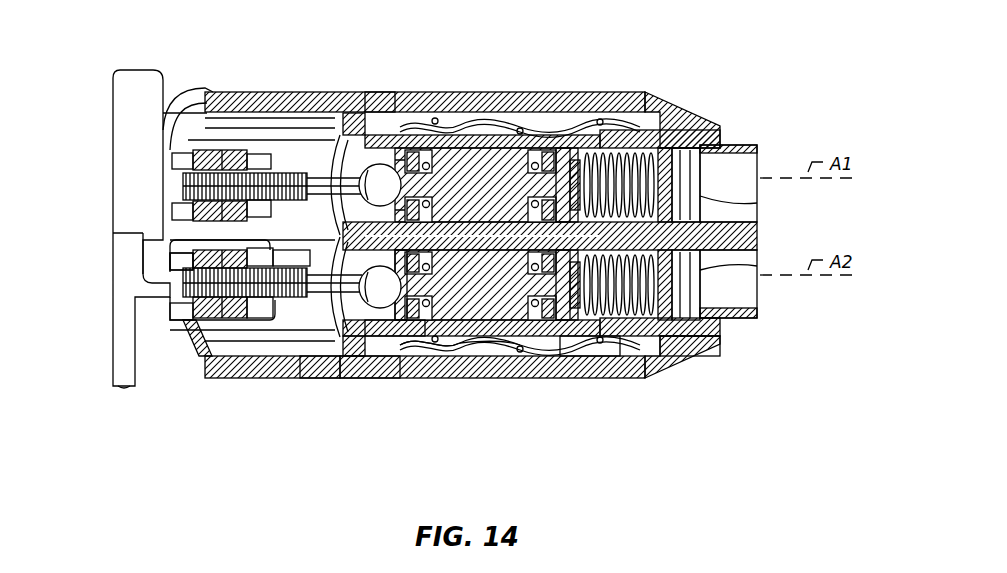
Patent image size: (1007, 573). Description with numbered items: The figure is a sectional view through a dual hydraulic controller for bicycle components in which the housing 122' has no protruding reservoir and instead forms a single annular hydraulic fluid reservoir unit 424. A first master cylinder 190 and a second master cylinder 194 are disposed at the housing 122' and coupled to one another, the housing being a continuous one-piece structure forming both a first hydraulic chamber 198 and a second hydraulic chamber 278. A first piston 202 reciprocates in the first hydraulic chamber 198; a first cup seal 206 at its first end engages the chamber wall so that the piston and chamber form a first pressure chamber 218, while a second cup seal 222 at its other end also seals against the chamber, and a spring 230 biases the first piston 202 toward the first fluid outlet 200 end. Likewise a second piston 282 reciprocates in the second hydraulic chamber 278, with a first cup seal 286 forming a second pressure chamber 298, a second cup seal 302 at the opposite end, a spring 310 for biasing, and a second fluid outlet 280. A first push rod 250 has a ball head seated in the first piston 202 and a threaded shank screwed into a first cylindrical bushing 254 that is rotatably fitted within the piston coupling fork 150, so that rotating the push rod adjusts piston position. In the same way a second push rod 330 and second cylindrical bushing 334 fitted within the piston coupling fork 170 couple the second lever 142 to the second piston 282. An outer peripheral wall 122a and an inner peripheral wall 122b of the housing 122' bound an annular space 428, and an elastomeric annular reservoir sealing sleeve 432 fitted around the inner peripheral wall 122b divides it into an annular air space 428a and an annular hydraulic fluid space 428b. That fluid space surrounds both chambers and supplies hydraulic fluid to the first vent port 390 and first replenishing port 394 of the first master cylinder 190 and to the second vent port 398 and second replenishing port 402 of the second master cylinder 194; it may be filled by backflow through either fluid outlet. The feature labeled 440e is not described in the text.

The second lever 142 is at (104, 323).
The piston coupling fork 150 is at (163, 120).
The housing 122' is at (407, 205).
The outer peripheral wall 122a is at (362, 388).
The inner peripheral wall 122b is at (335, 362).
The first push rod 250 is at (308, 175).
The first cylindrical bushing 254 is at (211, 150).
The second push rod 330 is at (282, 318).
The second cylindrical bushing 334 is at (205, 330).
The piston coupling fork 170 is at (173, 312).
The first hydraulic chamber 198 is at (476, 140).
The annular hydraulic fluid reservoir unit 424 is at (403, 95).
The annular space 428 is at (384, 362).
The annular air space 428a is at (403, 342).
The annular hydraulic fluid space 428b is at (466, 346).
The first piston 202 is at (440, 150).
The first replenishing port 394 is at (512, 160).
The first vent port 390 is at (568, 160).
The first cup seal 206 is at (545, 150).
The spring 230 is at (612, 165).
The first master cylinder 190 is at (662, 118).
The first pressure chamber 218 is at (652, 134).
The first fluid outlet 200 is at (755, 168).
The groove 440e is at (753, 197).
The second piston 282 is at (480, 285).
The second replenishing port 402 is at (512, 335).
The second vent port 398 is at (562, 338).
The first cup seal 286 is at (546, 340).
The second hydraulic chamber 278 is at (446, 345).
The second cup seal 302 is at (412, 352).
The annular reservoir sealing sleeve 432 is at (581, 343).
The second master cylinder 194 is at (663, 352).
The second pressure chamber 298 is at (695, 312).
The spring 310 is at (693, 347).
The second fluid outlet 280 is at (748, 290).
The second cup seal 222 is at (381, 100).